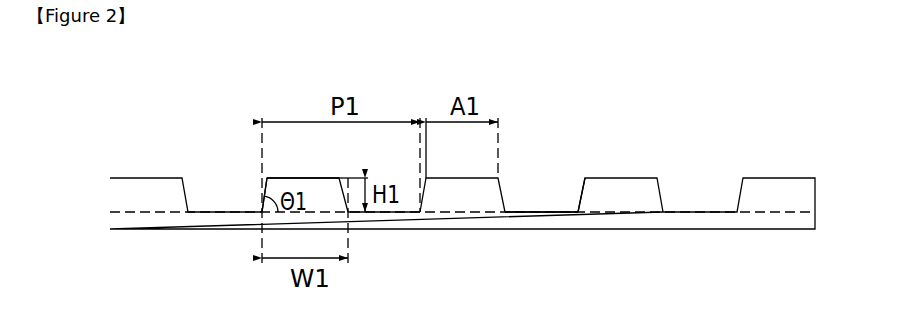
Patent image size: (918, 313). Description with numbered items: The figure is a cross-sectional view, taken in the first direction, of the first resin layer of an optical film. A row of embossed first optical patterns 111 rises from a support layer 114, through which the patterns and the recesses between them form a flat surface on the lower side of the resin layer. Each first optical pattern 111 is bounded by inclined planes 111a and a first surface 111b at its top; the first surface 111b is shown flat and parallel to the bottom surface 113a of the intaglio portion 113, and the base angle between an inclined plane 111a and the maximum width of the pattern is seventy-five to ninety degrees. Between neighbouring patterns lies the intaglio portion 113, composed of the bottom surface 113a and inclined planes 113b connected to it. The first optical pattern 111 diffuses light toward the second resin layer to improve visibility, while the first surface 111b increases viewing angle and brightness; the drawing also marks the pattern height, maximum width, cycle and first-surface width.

The first optical pattern 111 is at (320, 176).
The inclined plane 111a is at (263, 183).
The first surface 111b is at (333, 172).
The intaglio portion 113 is at (543, 180).
The bottom surface 113a is at (541, 213).
The inclined plane 113b is at (580, 178).
The support layer 114 is at (775, 219).